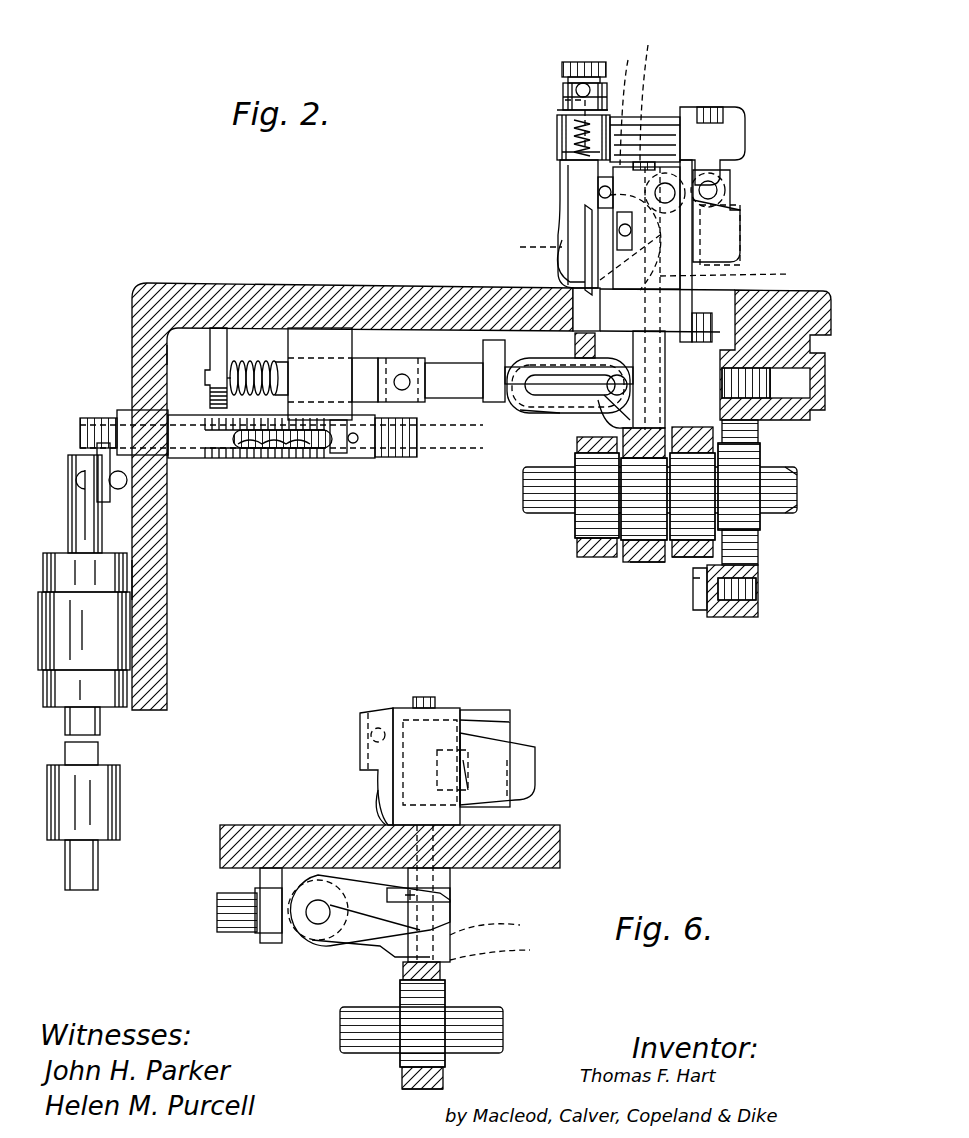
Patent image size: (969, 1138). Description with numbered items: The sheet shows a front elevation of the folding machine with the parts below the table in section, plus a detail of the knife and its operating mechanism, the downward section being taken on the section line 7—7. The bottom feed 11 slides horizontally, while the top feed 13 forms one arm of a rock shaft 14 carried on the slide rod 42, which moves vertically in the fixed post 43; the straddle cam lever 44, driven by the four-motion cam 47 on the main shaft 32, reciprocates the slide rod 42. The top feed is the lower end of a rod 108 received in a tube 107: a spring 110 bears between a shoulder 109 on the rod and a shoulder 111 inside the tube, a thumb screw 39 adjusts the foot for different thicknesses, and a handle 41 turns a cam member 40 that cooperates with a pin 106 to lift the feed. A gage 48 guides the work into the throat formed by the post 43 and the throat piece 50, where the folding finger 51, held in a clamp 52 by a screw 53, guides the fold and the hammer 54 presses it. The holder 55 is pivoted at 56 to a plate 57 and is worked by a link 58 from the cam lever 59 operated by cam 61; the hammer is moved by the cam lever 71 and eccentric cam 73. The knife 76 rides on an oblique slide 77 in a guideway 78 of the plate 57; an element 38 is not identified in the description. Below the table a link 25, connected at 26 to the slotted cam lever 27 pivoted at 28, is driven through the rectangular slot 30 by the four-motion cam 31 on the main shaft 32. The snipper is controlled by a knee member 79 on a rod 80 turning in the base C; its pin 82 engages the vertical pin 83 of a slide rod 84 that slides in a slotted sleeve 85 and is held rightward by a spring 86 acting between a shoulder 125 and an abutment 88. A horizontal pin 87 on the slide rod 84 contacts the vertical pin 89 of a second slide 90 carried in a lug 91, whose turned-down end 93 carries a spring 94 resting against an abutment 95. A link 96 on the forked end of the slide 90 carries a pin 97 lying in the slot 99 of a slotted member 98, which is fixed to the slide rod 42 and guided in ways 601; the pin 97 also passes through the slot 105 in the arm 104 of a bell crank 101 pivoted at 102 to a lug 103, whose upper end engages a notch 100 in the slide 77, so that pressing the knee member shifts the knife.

In FIG. 2, the section line 7 is at (642, 259).
In FIG. 2, the bottom feed 11 is at (580, 300).
In FIG. 2, the top feed 13 is at (558, 250).
In FIG. 2, the rock shaft 14 is at (742, 135).
In FIG. 2, the link 25 is at (713, 615).
In FIG. 2, the connection 26 is at (712, 590).
In FIG. 2, the slotted cam lever 27 is at (745, 600).
In FIG. 2, the pivot 28 is at (762, 400).
In FIG. 2, the rectangular slot 30 is at (758, 550).
In FIG. 2, the four-motion cam 31 is at (750, 515).
In FIG. 2, the main shaft 32 is at (535, 485).
In FIG. 6, the main shaft 32 is at (360, 1025).
In FIG. 2, the knurled nut 38 is at (690, 165).
In FIG. 2, the thumb screw 39 is at (575, 62).
In FIG. 2, the cam member 40 is at (563, 97).
In FIG. 2, the handle 41 is at (565, 85).
In FIG. 2, the slide rod 42 is at (655, 160).
In FIG. 2, the fixed post 43 is at (630, 165).
In FIG. 6, the fixed post 43 is at (415, 705).
In FIG. 2, the straddle cam lever 44 is at (690, 560).
In FIG. 6, the straddle cam lever 44 is at (410, 1082).
In FIG. 2, the four-motion cam 47 is at (640, 555).
In FIG. 6, the four-motion cam 47 is at (440, 1000).
In FIG. 2, the gage 48 is at (695, 250).
In FIG. 6, the throat piece 50 is at (375, 805).
In FIG. 2, the folding finger 51 is at (598, 192).
In FIG. 2, the clamp 52 is at (585, 205).
In FIG. 2, the screw 53 is at (600, 210).
In FIG. 2, the presser or hammer 54 is at (560, 265).
In FIG. 2, the holder 55 is at (617, 235).
In FIG. 2, the pivot 56 is at (713, 190).
In FIG. 2, the plate 57 is at (742, 225).
In FIG. 6, the plate 57 is at (505, 725).
In FIG. 2, the link 58 is at (740, 245).
In FIG. 2, the straddle cam lever 59 is at (700, 558).
In FIG. 2, the cam 61 is at (650, 563).
In FIG. 2, the straddle cam lever 71 is at (362, 288).
In FIG. 6, the straddle cam lever 71 is at (290, 825).
In FIG. 2, the eccentric cam 73 is at (592, 520).
In FIG. 2, the knife or snipper 76 is at (560, 135).
In FIG. 6, the knife or snipper 76 is at (372, 775).
In FIG. 2, the oblique slide 77 is at (740, 215).
In FIG. 6, the oblique slide 77 is at (530, 765).
In FIG. 6, the guideway 78 is at (512, 740).
In FIG. 2, the knee member 79 is at (88, 773).
In FIG. 2, the rod 80 is at (85, 725).
In FIG. 2, the pin 82 is at (90, 418).
In FIG. 2, the vertical pin 83 is at (97, 498).
In FIG. 2, the horizontal slide rod 84 is at (100, 405).
In FIG. 2, the slotted sleeve 85 is at (198, 460).
In FIG. 2, the spring 86 is at (300, 455).
In FIG. 2, the horizontal pin 87 is at (354, 445).
In FIG. 2, the abutment 88 is at (215, 458).
In FIG. 2, the vertical pin 89 is at (340, 460).
In FIG. 2, the slide rod 90 is at (370, 368).
In FIG. 2, the lug 91 is at (315, 345).
In FIG. 2, the turned-down portion 93 is at (248, 362).
In FIG. 2, the spring 94 is at (218, 345).
In FIG. 2, the abutment 95 is at (185, 345).
In FIG. 2, the link 96 is at (430, 450).
In FIG. 6, the link 96 is at (235, 912).
In FIG. 2, the horizontal pin 97 is at (610, 395).
In FIG. 6, the horizontal pin 97 is at (300, 918).
In FIG. 2, the slotted member 98 is at (540, 395).
In FIG. 6, the slotted member 98 is at (412, 935).
In FIG. 2, the slot 99 is at (600, 412).
In FIG. 6, the slot 99 is at (360, 918).
In FIG. 6, the notch 100 is at (466, 748).
In FIG. 6, the bell crank 101 is at (470, 780).
In FIG. 6, the pivot 102 is at (497, 933).
In FIG. 6, the lug 103 is at (512, 955).
In FIG. 2, the arm 104 is at (520, 413).
In FIG. 6, the arm 104 is at (340, 925).
In FIG. 6, the slot 105 is at (312, 940).
In FIG. 2, the pin 106 is at (628, 60).
In FIG. 2, the tube 107 is at (558, 112).
In FIG. 2, the rod 108 is at (578, 88).
In FIG. 2, the shoulder 109 is at (562, 150).
In FIG. 2, the spring 110 is at (648, 45).
In FIG. 2, the shoulder 111 is at (565, 100).
In FIG. 2, the shoulder 125 is at (322, 460).
In FIG. 2, the ways or guides 601 is at (490, 350).
In FIG. 6, the ways or guides 601 is at (265, 880).
In FIG. 2, the base C is at (160, 577).